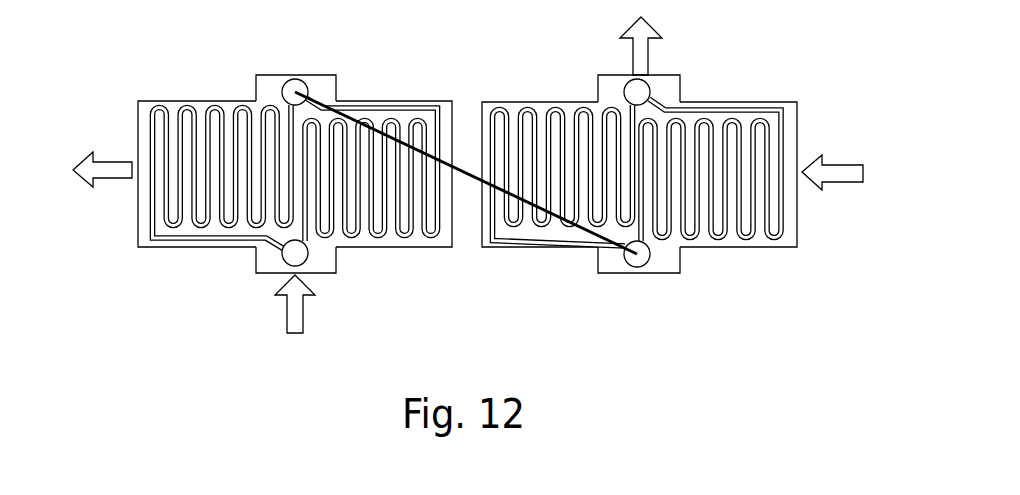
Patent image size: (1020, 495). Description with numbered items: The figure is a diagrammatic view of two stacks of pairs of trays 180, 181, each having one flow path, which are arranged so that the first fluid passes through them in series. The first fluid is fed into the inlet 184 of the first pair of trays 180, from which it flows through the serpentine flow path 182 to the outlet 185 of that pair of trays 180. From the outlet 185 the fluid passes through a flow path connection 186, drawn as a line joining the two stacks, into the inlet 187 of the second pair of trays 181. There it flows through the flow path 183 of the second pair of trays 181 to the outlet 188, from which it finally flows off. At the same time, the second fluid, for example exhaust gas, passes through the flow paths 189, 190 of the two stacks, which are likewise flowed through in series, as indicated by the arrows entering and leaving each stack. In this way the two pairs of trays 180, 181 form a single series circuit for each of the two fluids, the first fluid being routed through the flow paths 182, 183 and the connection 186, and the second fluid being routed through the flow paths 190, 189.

The first pair of trays 180 is at (272, 182).
The second pair of trays 181 is at (686, 196).
The flow path 182 is at (150, 212).
The flow path 183 is at (548, 250).
The inlet 184 is at (325, 258).
The outlet 185 is at (296, 80).
The flow path connection 186 is at (473, 175).
The inlet 187 is at (648, 262).
The outlet 188 is at (627, 85).
The flow path for the second fluid 189 is at (800, 235).
The flow path for the second fluid 190 is at (457, 225).